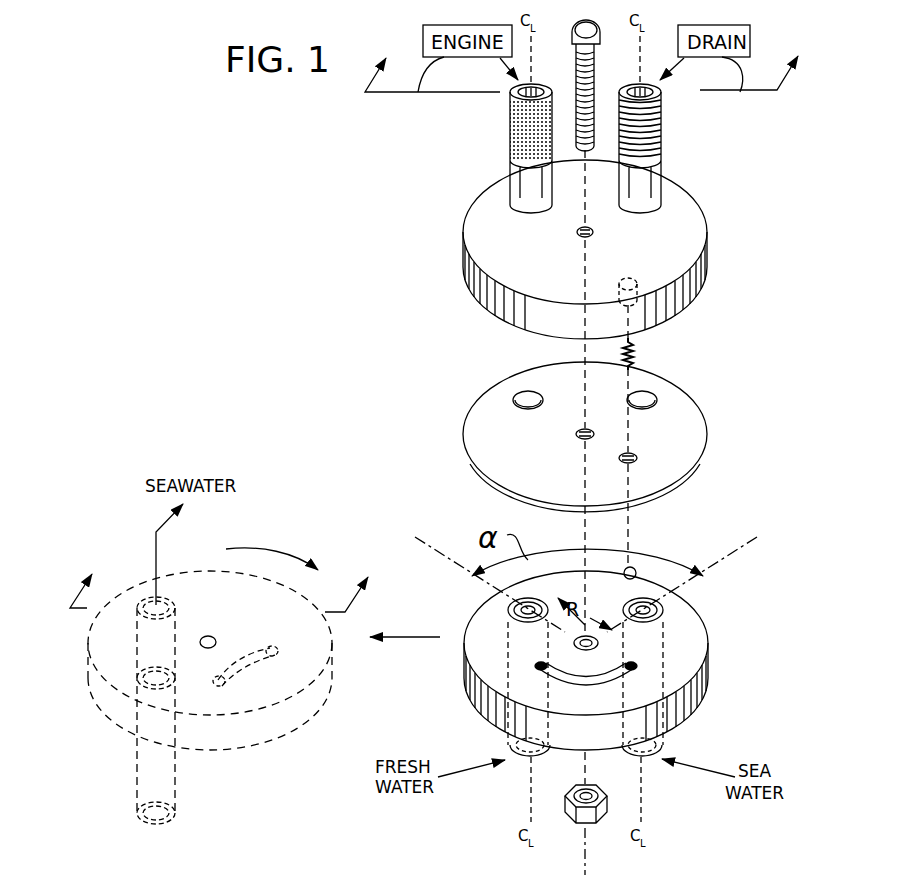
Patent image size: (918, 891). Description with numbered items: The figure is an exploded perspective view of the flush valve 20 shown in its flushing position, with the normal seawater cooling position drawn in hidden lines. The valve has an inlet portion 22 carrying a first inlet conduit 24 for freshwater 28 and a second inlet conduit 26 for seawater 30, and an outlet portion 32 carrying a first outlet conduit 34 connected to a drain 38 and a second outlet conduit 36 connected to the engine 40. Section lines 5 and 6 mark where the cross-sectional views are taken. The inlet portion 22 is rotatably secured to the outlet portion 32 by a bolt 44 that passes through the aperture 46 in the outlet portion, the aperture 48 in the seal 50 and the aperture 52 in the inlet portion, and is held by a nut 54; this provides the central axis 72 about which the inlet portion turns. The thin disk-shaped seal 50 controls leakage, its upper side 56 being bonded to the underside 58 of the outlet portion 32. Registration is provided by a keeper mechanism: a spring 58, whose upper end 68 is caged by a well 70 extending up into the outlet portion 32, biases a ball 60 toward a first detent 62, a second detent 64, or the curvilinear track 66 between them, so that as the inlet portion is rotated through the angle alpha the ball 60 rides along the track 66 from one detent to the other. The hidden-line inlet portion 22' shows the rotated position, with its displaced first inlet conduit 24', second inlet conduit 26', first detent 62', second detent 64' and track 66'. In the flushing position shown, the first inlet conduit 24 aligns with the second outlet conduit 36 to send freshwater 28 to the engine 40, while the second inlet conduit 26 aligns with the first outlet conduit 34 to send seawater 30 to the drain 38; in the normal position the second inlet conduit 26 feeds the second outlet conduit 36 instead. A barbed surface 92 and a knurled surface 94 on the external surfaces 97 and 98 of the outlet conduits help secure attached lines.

The section line 5- 5 is at (591, 63).
The section line 6- 6 is at (229, 581).
The flush valve 20 is at (745, 318).
The inlet portion 22 is at (614, 660).
The inlet portion in seawater cooling position 22' is at (216, 680).
The first inlet conduit 24 is at (508, 716).
The first inlet conduit in seawater cooling position 24' is at (124, 792).
The second inlet conduit 26 is at (667, 713).
The second inlet conduit in seawater cooling position 26' is at (109, 705).
The freshwater 28 is at (465, 777).
The seawater 30 is at (712, 777).
The outlet portion 32 is at (707, 230).
The first outlet conduit 34 is at (661, 178).
The second outlet conduit 36 is at (510, 178).
The drain 38 is at (740, 92).
The engine 40 is at (418, 92).
The bolt 44 is at (570, 22).
The aperture in outlet portion 46 is at (595, 233).
The aperture in seal 48 is at (574, 435).
The seal 50 is at (700, 404).
The aperture in inlet portion 52 is at (573, 645).
The nut 54 is at (600, 823).
The upper side of seal 56 is at (700, 448).
The spring 58 is at (478, 314).
The ball 60 is at (640, 566).
The first detent 62 is at (663, 652).
The first detent in seawater cooling position 62' is at (324, 669).
The second detent 64 is at (508, 659).
The second detent in seawater cooling position 64' is at (203, 738).
The track 66 is at (600, 683).
The track in seawater cooling position 66' is at (295, 691).
The upper end of spring 68 is at (636, 346).
The well 70 is at (612, 290).
The central axis 72 is at (582, 208).
The barbed surface 92 is at (510, 139).
The knurled surface 94 is at (661, 139).
The external surface of first outlet conduit 97 is at (661, 110).
The external surface of second outlet conduit 98 is at (510, 110).